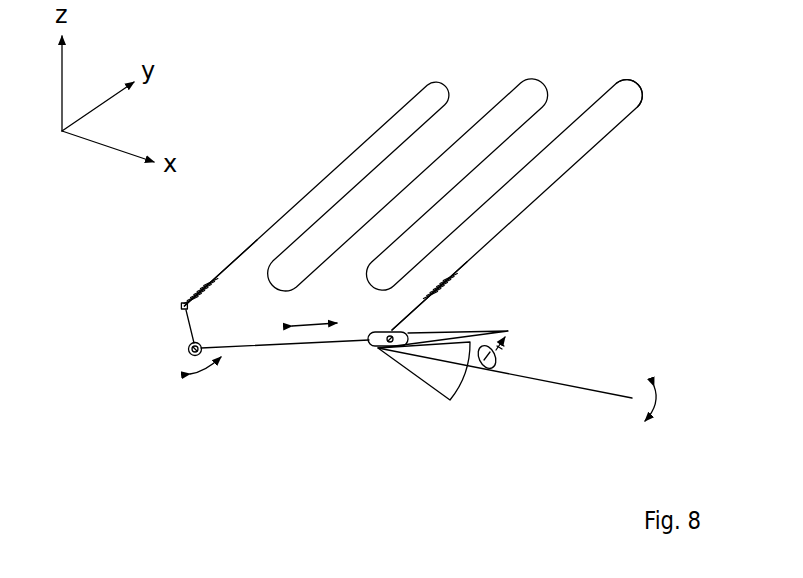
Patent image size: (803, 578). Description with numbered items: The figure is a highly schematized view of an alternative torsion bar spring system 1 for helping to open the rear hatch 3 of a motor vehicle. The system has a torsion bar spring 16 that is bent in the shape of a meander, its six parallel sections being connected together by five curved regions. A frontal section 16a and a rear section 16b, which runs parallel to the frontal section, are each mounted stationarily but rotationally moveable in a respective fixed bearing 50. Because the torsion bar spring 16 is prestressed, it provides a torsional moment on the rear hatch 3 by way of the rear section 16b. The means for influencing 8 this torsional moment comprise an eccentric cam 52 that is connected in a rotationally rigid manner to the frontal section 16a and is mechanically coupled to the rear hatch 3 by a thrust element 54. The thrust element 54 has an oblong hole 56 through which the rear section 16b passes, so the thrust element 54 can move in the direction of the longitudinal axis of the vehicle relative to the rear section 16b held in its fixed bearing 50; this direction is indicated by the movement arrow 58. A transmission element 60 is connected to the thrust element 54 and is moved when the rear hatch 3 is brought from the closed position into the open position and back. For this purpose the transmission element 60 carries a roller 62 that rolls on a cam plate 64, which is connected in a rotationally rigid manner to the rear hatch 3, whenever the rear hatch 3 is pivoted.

The torsion bar spring system 1 is at (303, 159).
The torsion bar spring 16 is at (638, 110).
The frontal section 16a is at (233, 264).
The rear section 16b is at (476, 259).
The bearing 50 is at (190, 292).
The eccentric cam 52 is at (190, 326).
The thrust element 54 is at (283, 353).
The oblong hole 56 is at (367, 348).
The movement arrow 58 is at (318, 328).
The transmission element 60 is at (510, 340).
The roller 62 is at (497, 362).
The cam plate 64 is at (443, 396).
The rear hatch 3 is at (568, 389).
The means for influencing 8 is at (402, 410).